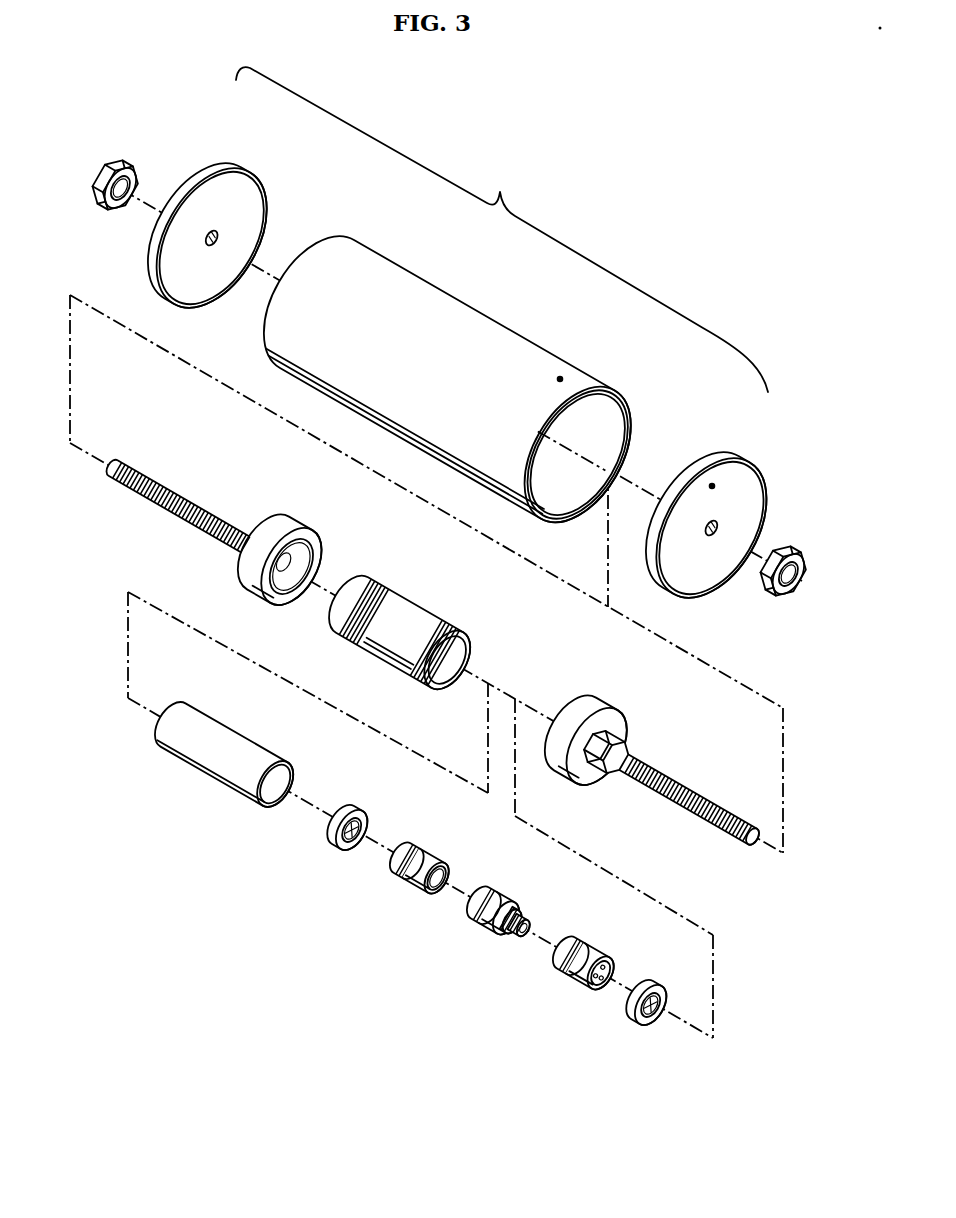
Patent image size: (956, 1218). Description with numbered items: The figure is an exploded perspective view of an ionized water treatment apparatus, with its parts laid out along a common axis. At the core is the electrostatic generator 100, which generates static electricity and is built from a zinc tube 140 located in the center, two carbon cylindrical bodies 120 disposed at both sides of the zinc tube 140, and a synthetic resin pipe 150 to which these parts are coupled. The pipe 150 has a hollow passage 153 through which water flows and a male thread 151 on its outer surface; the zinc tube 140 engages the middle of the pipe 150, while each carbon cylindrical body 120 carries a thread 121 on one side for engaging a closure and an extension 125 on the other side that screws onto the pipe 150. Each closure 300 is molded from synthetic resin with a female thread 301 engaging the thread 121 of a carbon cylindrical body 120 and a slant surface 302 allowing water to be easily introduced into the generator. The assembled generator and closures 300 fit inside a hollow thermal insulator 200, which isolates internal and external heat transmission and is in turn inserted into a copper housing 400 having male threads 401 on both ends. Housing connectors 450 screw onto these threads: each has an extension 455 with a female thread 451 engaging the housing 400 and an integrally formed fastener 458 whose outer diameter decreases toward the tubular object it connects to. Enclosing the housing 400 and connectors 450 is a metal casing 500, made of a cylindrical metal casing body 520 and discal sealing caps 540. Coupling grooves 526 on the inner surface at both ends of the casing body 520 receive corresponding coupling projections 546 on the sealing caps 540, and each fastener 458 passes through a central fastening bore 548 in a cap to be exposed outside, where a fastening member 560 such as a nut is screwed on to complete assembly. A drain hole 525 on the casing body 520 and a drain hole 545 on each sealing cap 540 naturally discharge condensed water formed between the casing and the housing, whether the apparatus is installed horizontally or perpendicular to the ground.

The electrostatic generator 100 is at (514, 923).
The carbon cylindrical body 120 is at (517, 912).
The thread 121 is at (402, 852).
The extension 125 is at (427, 858).
The zinc tube 140 is at (530, 920).
The pipe 150 is at (520, 926).
The male thread 151 is at (500, 914).
The hollow passage 153 is at (523, 928).
The hollow thermal insulator 200 is at (180, 768).
The closure 300 is at (503, 899).
The female thread 301 is at (351, 830).
The slant surface 302 is at (655, 1010).
The housing 400 is at (411, 615).
The male thread 401 is at (400, 633).
The housing connector 450 is at (429, 644).
The female thread 451 is at (175, 482).
The extension 455 is at (283, 527).
The fastener 458 is at (157, 506).
The metal casing 500 is at (438, 352).
The metal casing body 520 is at (460, 379).
The drain hole 525 is at (561, 378).
The coupling groove 526 is at (578, 454).
The sealing cap 540 is at (469, 361).
The drain hole 545 is at (714, 484).
The coupling projection 546 is at (240, 187).
The fastening bore 548 is at (225, 240).
The fastening member 560 is at (122, 163).